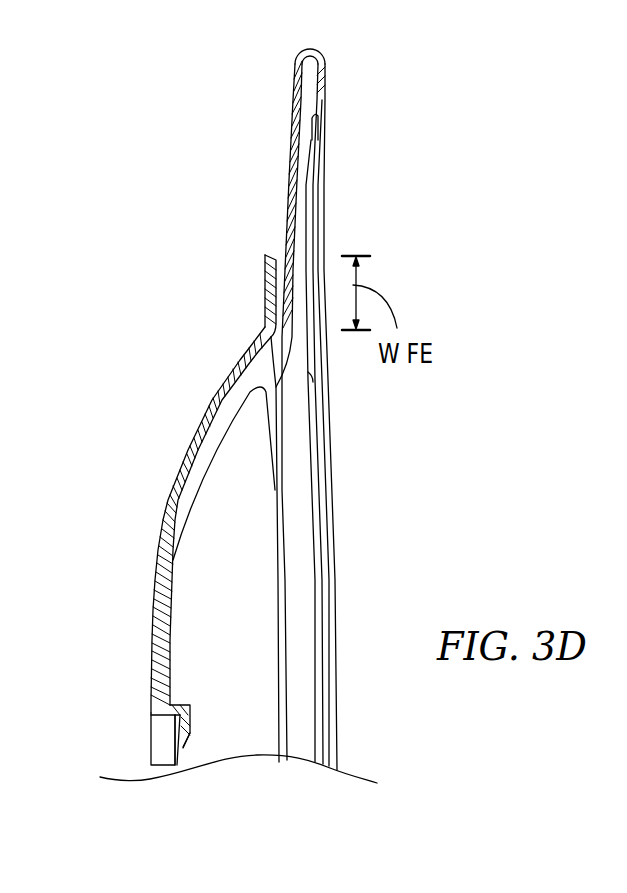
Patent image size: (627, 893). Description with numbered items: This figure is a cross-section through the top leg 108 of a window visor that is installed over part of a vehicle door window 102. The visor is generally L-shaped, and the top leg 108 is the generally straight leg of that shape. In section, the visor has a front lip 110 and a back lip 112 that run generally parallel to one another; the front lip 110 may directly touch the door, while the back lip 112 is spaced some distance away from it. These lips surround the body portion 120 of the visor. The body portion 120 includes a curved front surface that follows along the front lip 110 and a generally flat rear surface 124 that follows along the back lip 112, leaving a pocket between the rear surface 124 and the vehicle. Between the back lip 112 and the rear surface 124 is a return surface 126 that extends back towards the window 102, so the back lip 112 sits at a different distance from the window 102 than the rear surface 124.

The window 102 is at (322, 88).
The top leg 108 is at (105, 420).
The front lip 110 is at (263, 303).
The back lip 112 is at (181, 742).
The body portion 120 is at (148, 520).
The rear surface 124 is at (148, 612).
The return surface 126 is at (172, 743).